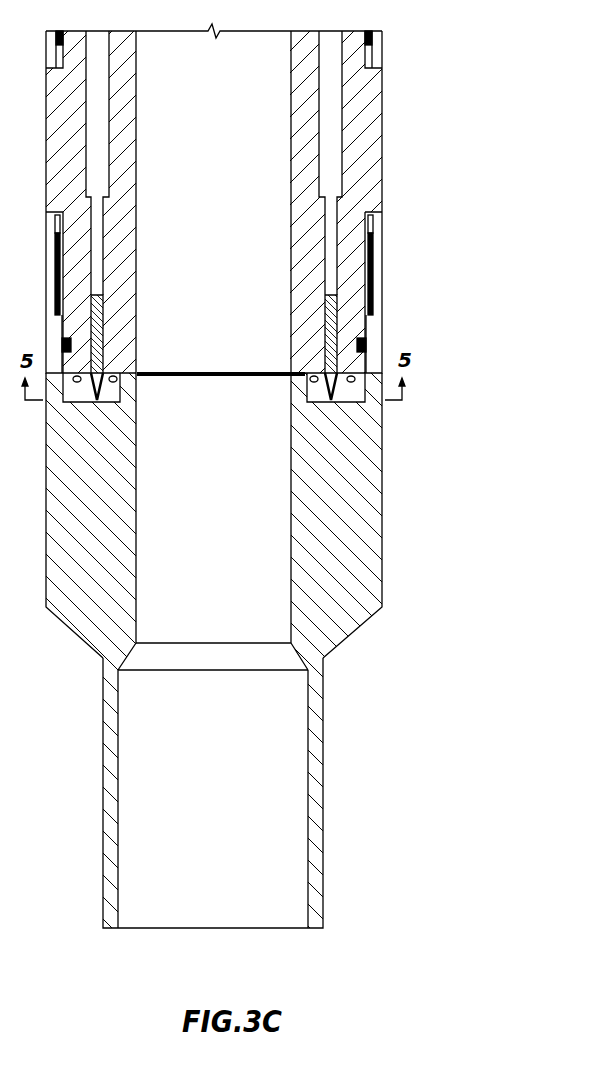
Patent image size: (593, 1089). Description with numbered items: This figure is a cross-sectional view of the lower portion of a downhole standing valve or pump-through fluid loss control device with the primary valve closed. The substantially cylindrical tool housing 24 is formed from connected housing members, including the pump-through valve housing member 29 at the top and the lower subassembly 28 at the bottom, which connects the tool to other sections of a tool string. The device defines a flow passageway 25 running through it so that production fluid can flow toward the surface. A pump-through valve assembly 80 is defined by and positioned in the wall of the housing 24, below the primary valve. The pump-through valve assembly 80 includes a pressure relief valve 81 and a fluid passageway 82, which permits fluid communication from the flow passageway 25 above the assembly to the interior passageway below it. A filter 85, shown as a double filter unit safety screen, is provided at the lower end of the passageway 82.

The pump-through valve assembly 80 is at (391, 145).
The pump-through valve housing member 29 is at (382, 180).
The fluid passageway 82 is at (327, 95).
The pressure relief valve 81 is at (332, 308).
The filter 85 is at (323, 388).
The tool housing 24 is at (380, 517).
The flow passageway 25 is at (245, 555).
The lower subassembly 28 is at (323, 837).